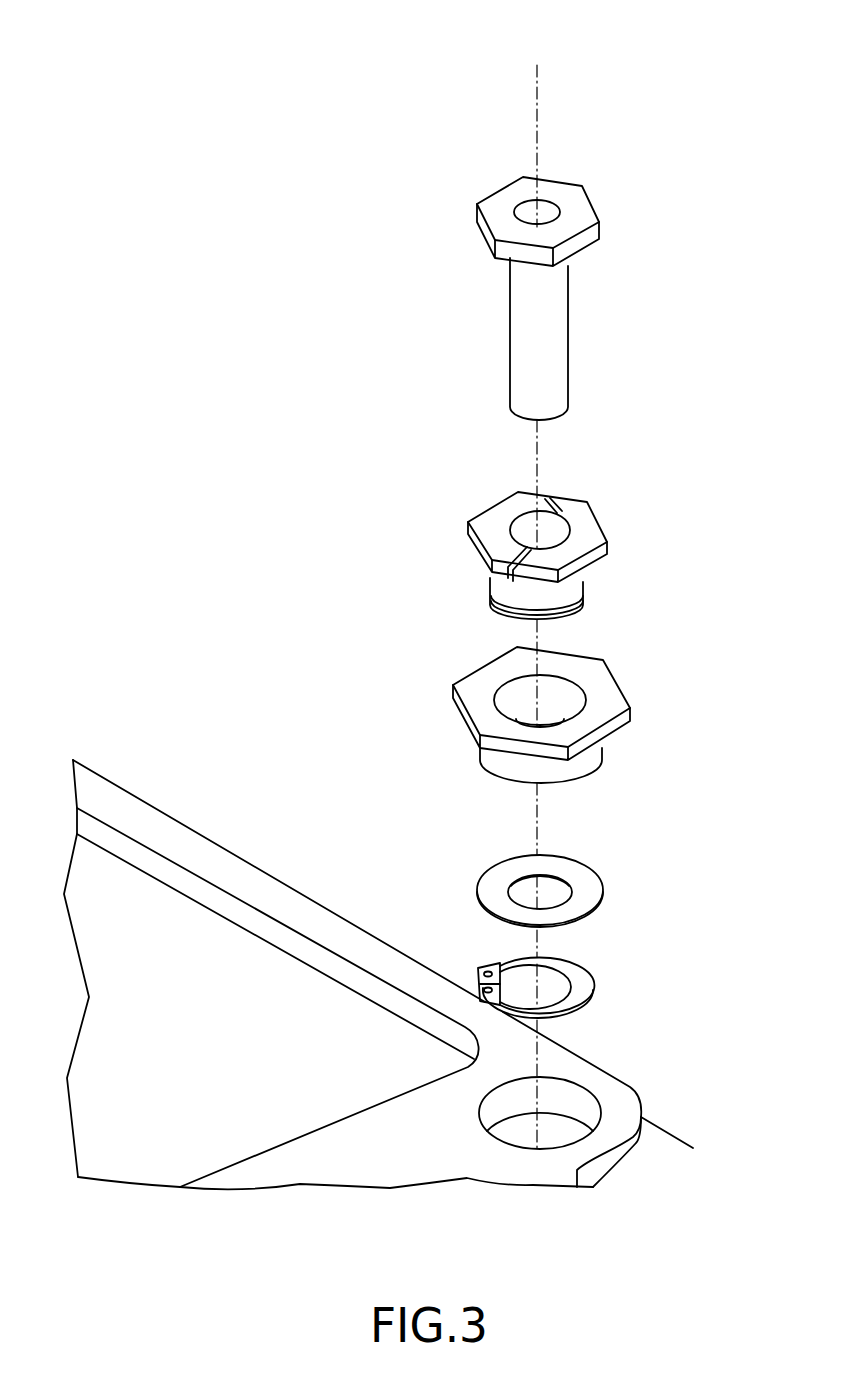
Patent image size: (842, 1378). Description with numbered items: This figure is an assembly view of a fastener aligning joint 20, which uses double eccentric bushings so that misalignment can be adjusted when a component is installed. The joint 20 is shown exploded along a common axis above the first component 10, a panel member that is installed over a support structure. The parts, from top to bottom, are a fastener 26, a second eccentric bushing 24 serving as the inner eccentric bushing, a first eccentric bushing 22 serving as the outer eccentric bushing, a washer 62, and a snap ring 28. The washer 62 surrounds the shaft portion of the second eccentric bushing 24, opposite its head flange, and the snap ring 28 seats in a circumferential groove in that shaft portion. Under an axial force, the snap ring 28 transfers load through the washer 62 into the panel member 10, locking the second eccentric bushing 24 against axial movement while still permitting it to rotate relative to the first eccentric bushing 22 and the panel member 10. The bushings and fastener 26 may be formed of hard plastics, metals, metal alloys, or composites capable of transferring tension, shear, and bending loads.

The first component 10 is at (312, 1088).
The fastener aligning joint 20 is at (656, 112).
The first eccentric bushing 22 is at (597, 687).
The second eccentric bushing 24 is at (582, 522).
The fastener 26 is at (543, 322).
The snap ring 28 is at (585, 973).
The washer 62 is at (582, 887).